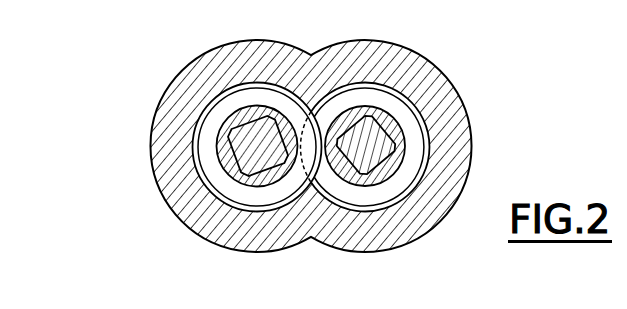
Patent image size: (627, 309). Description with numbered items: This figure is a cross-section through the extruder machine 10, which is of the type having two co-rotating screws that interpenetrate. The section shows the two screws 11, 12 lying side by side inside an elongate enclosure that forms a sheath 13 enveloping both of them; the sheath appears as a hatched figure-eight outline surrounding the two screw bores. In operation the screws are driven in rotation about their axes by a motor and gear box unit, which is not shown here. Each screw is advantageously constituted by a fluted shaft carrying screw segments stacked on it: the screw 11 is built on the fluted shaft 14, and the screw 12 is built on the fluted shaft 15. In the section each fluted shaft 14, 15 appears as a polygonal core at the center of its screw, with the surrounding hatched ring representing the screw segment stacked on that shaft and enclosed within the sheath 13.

The extruder machine 10 is at (322, 126).
The screw 11 is at (393, 143).
The screw 12 is at (223, 151).
The sheath 13 is at (246, 63).
The fluted shaft 14 is at (382, 176).
The fluted shaft 15 is at (250, 174).